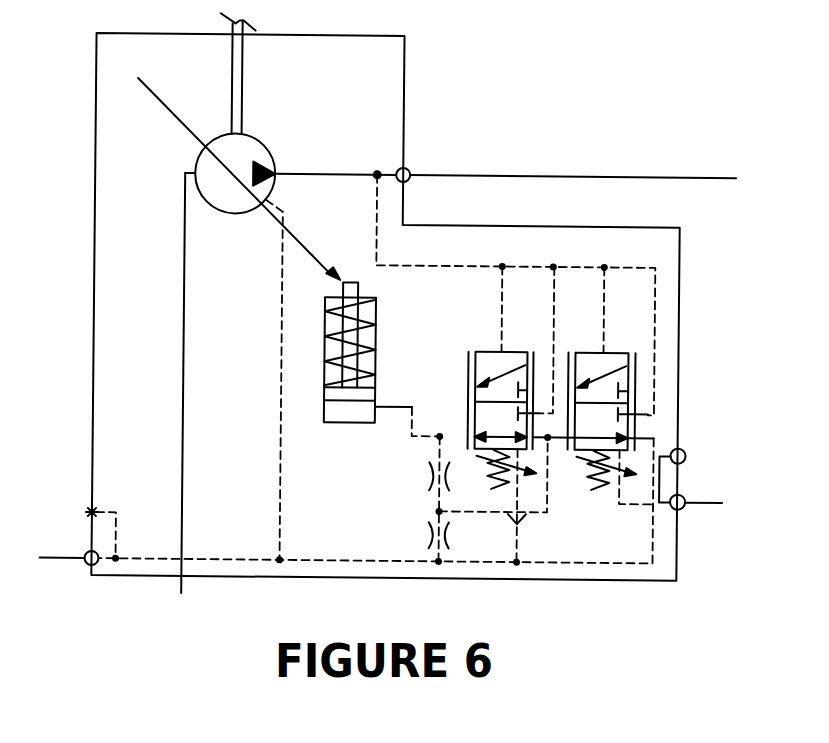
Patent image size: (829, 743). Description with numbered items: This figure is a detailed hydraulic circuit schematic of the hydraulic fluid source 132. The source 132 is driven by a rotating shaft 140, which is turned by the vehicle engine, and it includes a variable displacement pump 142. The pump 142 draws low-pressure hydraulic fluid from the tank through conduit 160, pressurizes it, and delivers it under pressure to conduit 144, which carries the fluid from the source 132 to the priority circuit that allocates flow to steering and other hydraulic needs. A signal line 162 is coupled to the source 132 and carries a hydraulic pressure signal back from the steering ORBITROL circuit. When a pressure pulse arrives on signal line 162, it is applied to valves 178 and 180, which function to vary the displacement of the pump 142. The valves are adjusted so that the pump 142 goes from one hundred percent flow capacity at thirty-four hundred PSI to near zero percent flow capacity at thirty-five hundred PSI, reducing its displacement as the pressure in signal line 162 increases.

The hydraulic fluid source 132 is at (546, 105).
The rotating shaft 140 is at (242, 74).
The variable displacement pump 142 is at (253, 134).
The conduit 144 is at (567, 176).
The conduit 160 is at (184, 403).
The signal line 162 is at (695, 502).
The valve 178 is at (617, 351).
The valve 180 is at (493, 351).